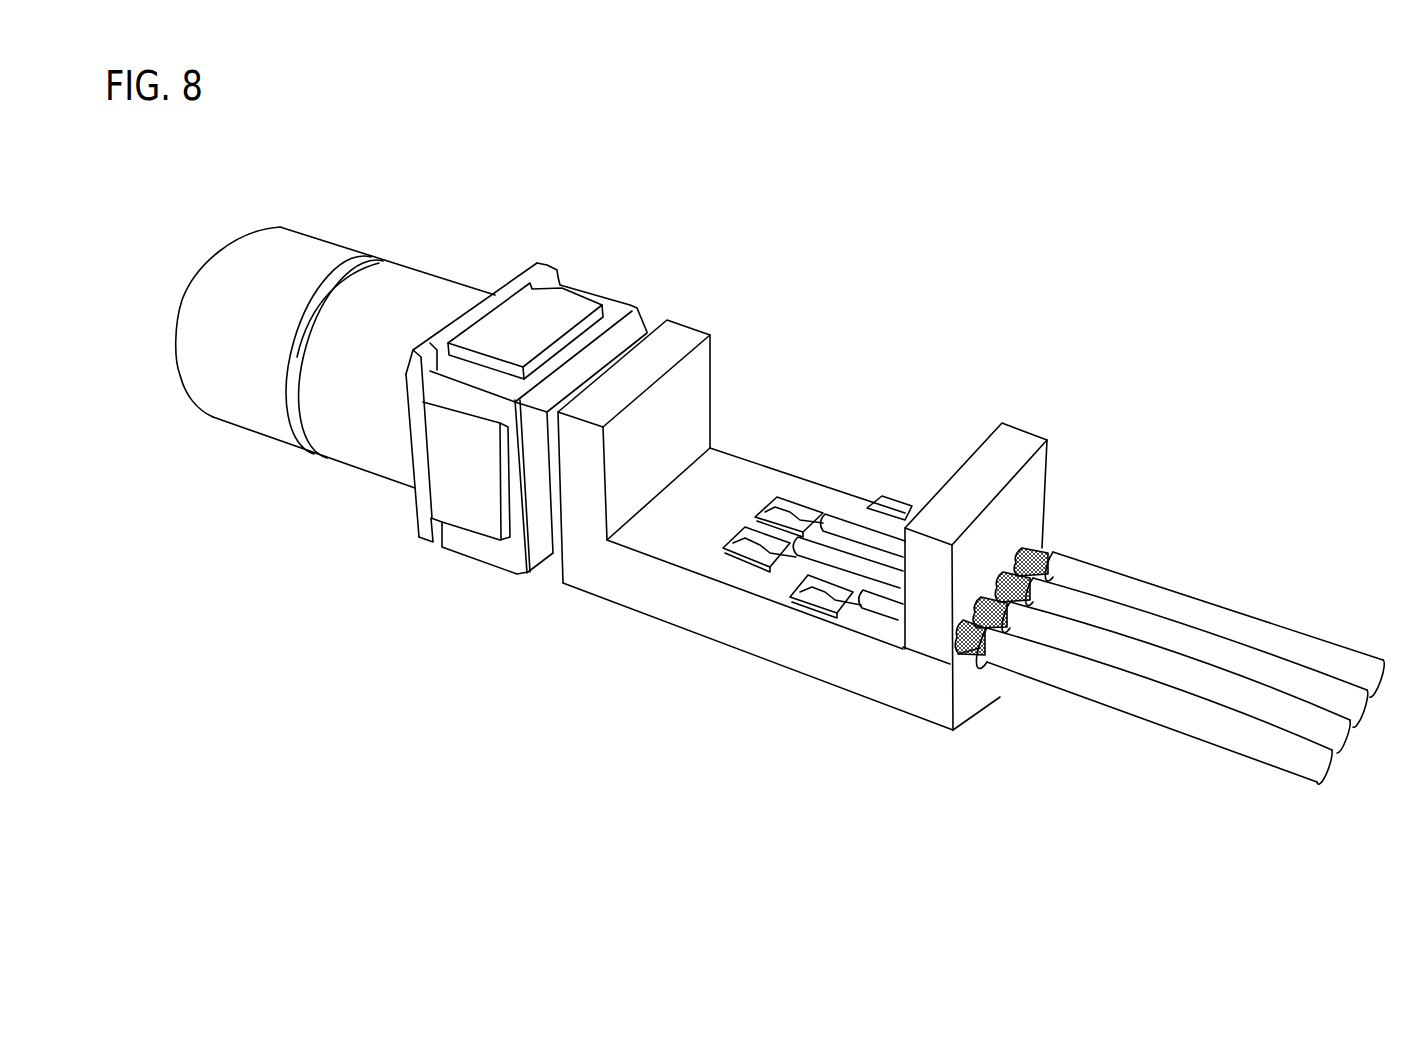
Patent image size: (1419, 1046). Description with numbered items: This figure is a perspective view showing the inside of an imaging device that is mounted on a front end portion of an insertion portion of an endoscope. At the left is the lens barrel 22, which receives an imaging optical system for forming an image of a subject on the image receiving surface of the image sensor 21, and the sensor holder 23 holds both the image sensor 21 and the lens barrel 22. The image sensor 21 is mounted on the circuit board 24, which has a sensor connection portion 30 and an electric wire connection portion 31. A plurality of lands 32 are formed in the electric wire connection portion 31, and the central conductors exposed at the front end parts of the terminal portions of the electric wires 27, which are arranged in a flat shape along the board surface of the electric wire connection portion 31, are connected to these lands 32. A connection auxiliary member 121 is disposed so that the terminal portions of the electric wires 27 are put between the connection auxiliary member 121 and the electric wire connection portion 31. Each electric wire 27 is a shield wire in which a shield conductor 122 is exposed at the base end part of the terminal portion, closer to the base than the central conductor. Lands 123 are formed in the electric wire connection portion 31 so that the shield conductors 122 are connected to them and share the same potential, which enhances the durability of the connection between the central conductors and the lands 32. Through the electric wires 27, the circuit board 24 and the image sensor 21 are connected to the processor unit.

The image sensor 21 is at (512, 560).
The lens barrel 22 is at (313, 240).
The sensor holder 23 is at (563, 306).
The circuit board 24 is at (824, 300).
The electric wires 27 is at (1197, 603).
The sensor connection portion 30 is at (682, 333).
The electric wire connection portion 31 is at (763, 467).
The lands 32 is at (798, 503).
The connection auxiliary member 121 is at (1015, 433).
The shield conductor 122 is at (1043, 547).
The lands 123 is at (891, 642).